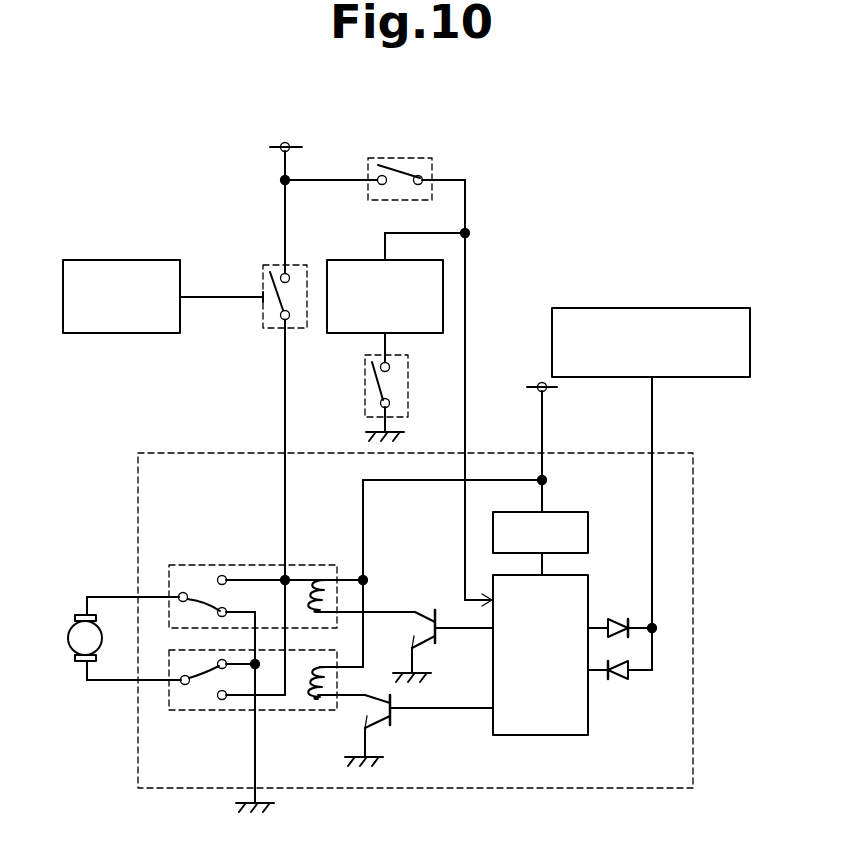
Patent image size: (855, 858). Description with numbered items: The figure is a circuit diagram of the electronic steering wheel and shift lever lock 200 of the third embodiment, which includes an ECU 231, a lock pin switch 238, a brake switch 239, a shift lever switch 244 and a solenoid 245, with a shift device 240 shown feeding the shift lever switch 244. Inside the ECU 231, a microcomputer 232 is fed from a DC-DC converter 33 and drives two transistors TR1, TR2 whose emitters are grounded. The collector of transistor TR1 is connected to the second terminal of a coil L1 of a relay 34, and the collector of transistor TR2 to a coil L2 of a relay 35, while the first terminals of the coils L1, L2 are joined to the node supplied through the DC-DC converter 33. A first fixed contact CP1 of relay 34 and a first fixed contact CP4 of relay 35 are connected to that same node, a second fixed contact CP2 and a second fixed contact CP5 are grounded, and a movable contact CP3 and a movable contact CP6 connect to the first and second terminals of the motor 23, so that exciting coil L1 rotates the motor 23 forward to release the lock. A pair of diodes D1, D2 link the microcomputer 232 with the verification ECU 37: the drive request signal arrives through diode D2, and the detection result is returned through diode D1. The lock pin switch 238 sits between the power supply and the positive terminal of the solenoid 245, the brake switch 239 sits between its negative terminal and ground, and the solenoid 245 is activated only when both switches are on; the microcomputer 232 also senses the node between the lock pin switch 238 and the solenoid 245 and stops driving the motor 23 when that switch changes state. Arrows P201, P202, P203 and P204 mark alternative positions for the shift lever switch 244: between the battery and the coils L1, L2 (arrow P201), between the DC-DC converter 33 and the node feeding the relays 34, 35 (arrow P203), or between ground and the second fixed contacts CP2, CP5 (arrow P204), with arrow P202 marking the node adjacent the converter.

The lock pin switch 238 is at (432, 161).
The shift device 240 is at (148, 258).
The shift lever switch 244 is at (262, 270).
The electronic steering wheel and shift lever lock 200 is at (676, 264).
The verification ECU 37 is at (750, 365).
The solenoid 245 is at (430, 333).
The brake switch 239 is at (362, 383).
The arrow P203 is at (544, 428).
The terminal P202 is at (546, 498).
The DC-DC converter 33 is at (566, 512).
The arrow P201 is at (407, 484).
The relay 34 is at (305, 562).
The coil L1 is at (330, 578).
The transistor TR1 is at (425, 609).
The diode D1 is at (620, 620).
The first fixed contact CP1 is at (228, 572).
The second fixed contact CP2 is at (207, 605).
The movable contact CP3 is at (170, 581).
The motor 23 is at (72, 628).
The movable contact CP6 is at (175, 685).
The second fixed contact CP5 is at (207, 674).
The first fixed contact CP4 is at (224, 705).
The coil L2 is at (312, 700).
The relay 35 is at (275, 715).
The transistor TR2 is at (392, 721).
The diode D2 is at (619, 680).
The ECU 231 is at (695, 713).
The microcomputer 232 is at (571, 736).
The arrow P204 is at (252, 771).